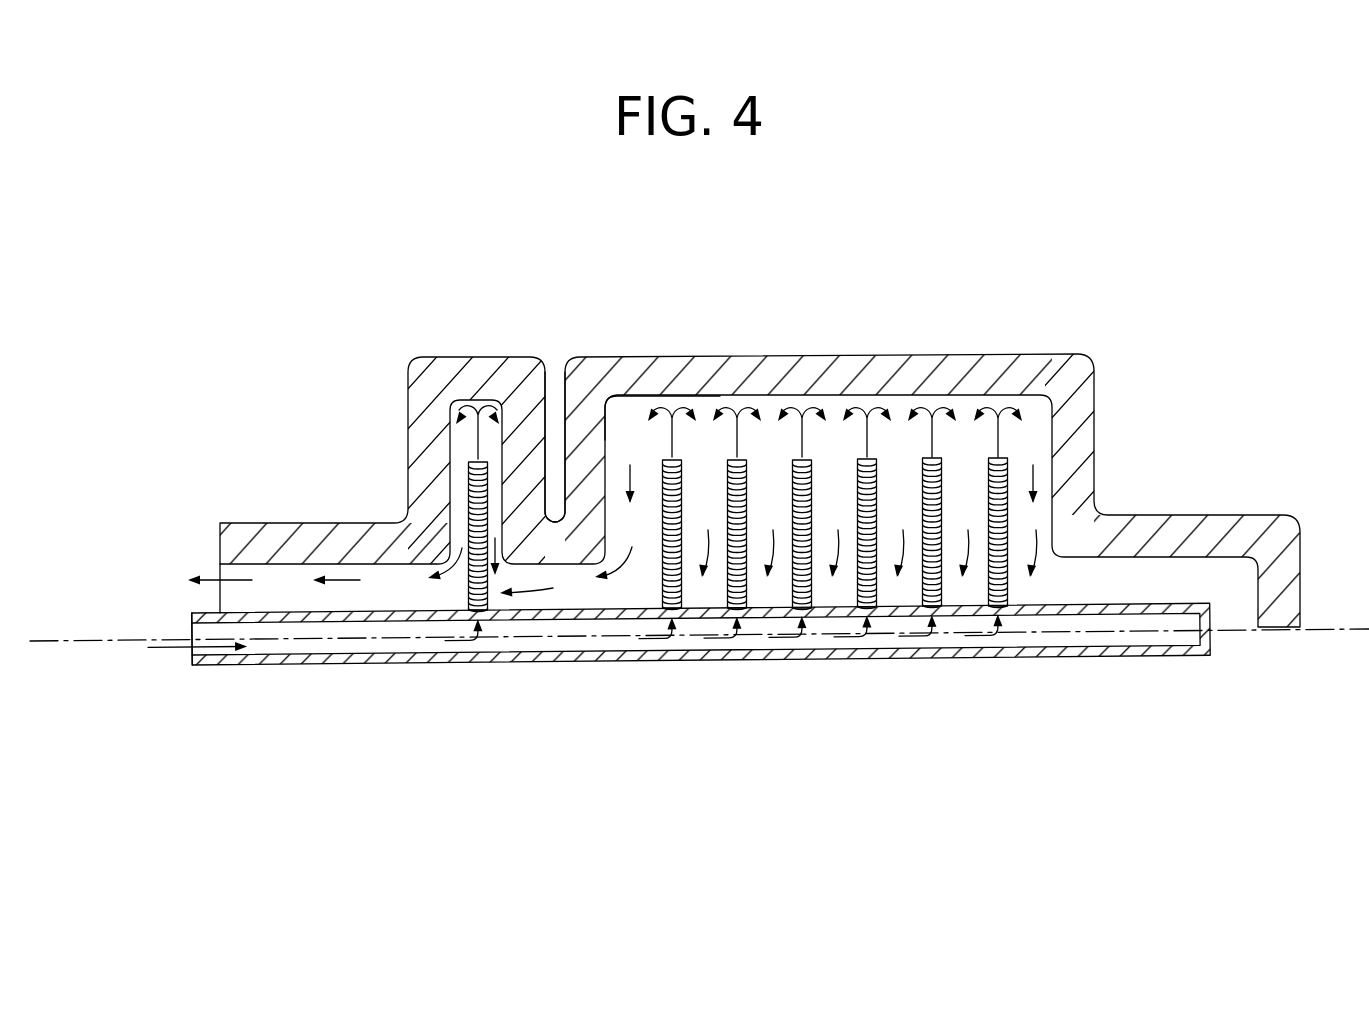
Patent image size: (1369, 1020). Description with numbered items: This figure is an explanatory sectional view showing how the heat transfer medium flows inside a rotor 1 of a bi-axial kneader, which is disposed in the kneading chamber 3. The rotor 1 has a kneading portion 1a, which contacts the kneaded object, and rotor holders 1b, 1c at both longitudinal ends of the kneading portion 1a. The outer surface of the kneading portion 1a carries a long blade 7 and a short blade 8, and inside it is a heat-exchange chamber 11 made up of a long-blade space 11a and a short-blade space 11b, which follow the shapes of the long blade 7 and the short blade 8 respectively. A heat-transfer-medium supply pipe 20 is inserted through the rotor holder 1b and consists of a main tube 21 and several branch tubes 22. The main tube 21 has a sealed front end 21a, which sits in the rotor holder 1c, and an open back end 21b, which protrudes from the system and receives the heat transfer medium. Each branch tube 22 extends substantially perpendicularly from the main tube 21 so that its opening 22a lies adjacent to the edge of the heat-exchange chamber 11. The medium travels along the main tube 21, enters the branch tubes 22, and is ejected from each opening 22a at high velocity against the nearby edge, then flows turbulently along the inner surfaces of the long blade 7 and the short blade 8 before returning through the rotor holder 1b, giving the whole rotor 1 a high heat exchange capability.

The rotor 1 is at (1284, 505).
The kneading portion 1a is at (1101, 349).
The rotor holder 1b is at (278, 519).
The rotor holder 1c is at (1182, 509).
The kneading chamber 3 is at (823, 266).
The long blade 7 is at (919, 337).
The short blade 8 is at (481, 347).
The heat-exchange chamber 11 is at (670, 273).
The long-blade space 11a is at (708, 408).
The short-blade space 11b is at (553, 400).
The heat-transfer-medium supply pipe 20 is at (699, 695).
The main tube 21 is at (287, 667).
The front end 21a is at (1212, 640).
The back end 21b is at (190, 654).
The branch tube 22 is at (468, 503).
The opening 22a is at (472, 460).